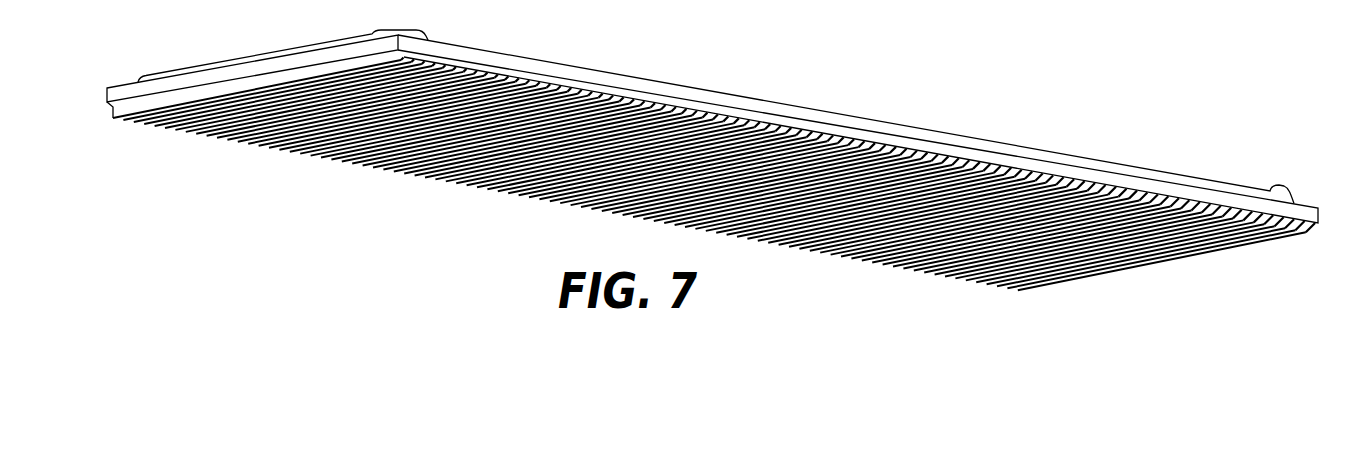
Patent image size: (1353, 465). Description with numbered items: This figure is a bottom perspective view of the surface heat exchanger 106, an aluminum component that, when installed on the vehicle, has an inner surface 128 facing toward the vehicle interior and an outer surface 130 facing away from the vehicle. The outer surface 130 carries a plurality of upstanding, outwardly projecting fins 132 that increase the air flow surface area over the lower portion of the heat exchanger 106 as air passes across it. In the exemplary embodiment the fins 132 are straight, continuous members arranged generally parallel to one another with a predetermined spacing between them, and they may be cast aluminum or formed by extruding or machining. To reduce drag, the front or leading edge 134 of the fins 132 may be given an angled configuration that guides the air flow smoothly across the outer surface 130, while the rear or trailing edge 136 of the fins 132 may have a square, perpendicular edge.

The surface heat exchanger 106 is at (978, 90).
The inner surface 128 is at (729, 88).
The outer surface 130 is at (524, 177).
The fins 132 is at (246, 92).
The leading edge 134 is at (404, 58).
The trailing edge 136 is at (113, 116).